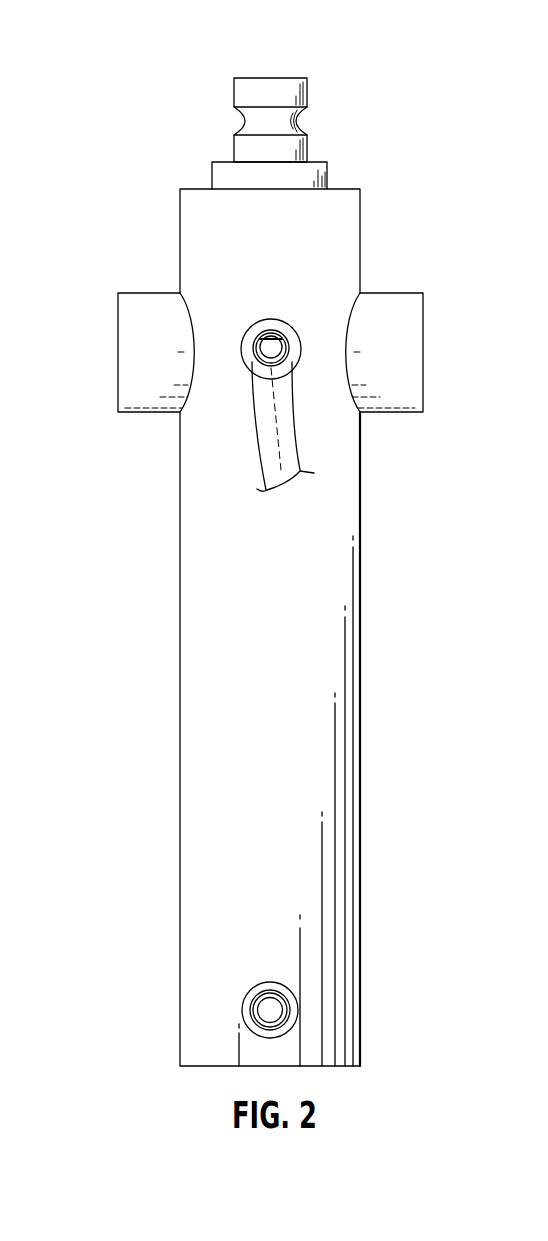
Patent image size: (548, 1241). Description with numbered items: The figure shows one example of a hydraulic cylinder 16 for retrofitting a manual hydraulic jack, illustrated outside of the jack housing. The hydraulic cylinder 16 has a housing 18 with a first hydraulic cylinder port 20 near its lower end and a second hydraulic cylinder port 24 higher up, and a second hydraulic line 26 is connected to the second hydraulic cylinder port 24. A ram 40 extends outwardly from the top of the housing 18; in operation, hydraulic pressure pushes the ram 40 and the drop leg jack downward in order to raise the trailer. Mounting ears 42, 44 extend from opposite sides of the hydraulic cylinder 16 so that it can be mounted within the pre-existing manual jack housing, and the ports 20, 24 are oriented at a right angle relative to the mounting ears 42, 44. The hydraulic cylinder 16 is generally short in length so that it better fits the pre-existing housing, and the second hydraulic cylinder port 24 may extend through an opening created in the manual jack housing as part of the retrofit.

The hydraulic cylinder 16 is at (198, 30).
The housing 18 is at (360, 693).
The first hydraulic cylinder port 20 is at (243, 1012).
The second hydraulic cylinder port 24 is at (272, 337).
The second hydraulic line 26 is at (288, 448).
The ram 40 is at (307, 92).
The mounting ear 42 is at (118, 359).
The mounting ear 44 is at (423, 368).